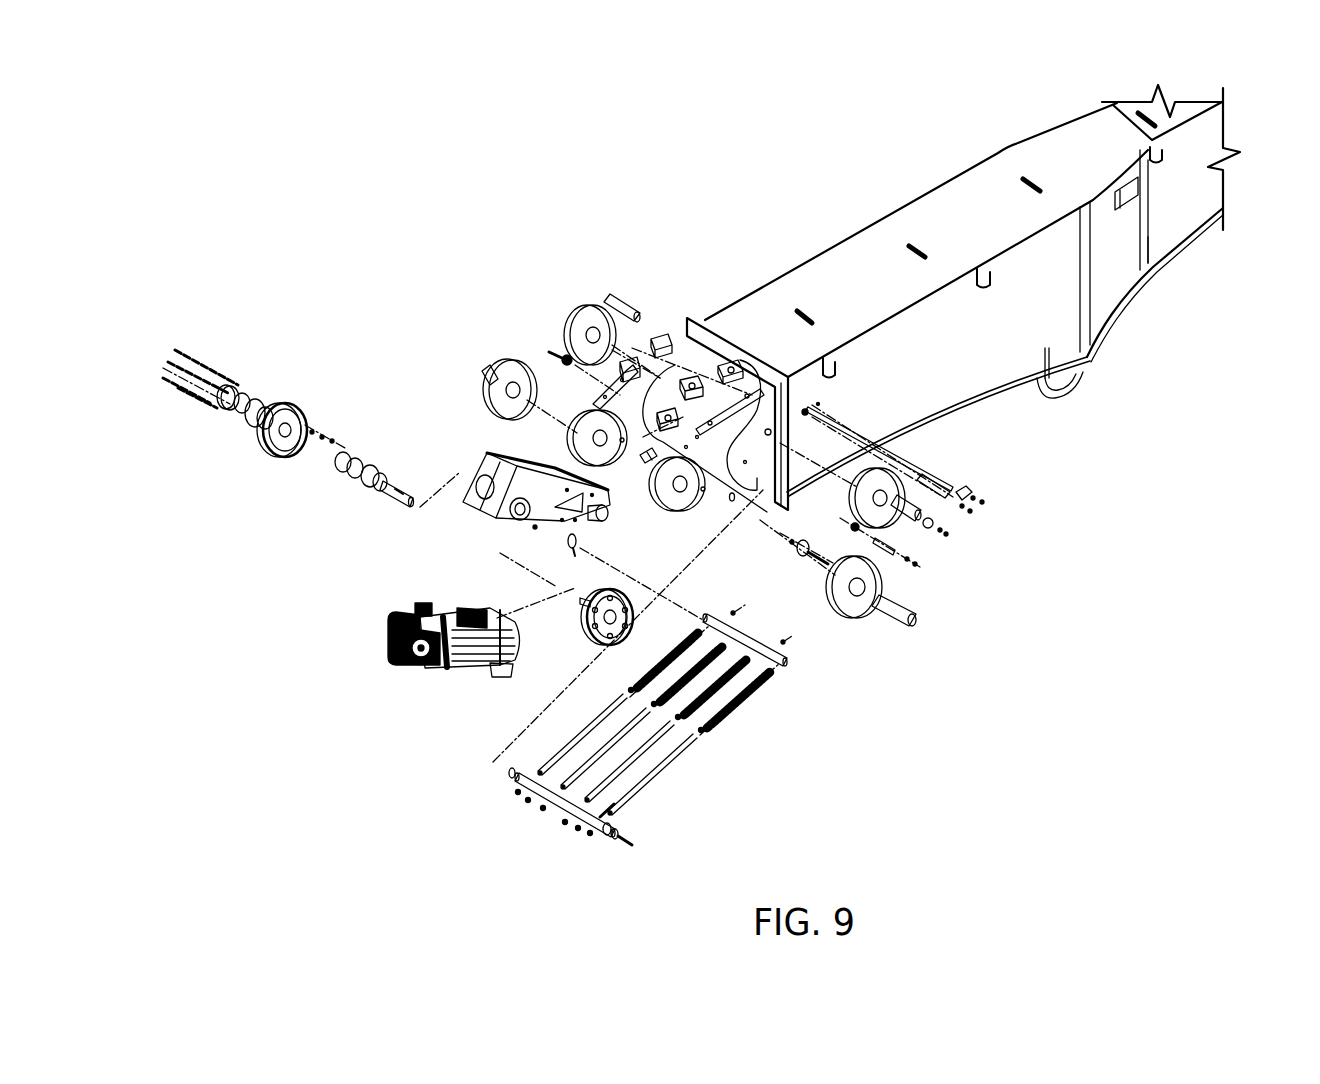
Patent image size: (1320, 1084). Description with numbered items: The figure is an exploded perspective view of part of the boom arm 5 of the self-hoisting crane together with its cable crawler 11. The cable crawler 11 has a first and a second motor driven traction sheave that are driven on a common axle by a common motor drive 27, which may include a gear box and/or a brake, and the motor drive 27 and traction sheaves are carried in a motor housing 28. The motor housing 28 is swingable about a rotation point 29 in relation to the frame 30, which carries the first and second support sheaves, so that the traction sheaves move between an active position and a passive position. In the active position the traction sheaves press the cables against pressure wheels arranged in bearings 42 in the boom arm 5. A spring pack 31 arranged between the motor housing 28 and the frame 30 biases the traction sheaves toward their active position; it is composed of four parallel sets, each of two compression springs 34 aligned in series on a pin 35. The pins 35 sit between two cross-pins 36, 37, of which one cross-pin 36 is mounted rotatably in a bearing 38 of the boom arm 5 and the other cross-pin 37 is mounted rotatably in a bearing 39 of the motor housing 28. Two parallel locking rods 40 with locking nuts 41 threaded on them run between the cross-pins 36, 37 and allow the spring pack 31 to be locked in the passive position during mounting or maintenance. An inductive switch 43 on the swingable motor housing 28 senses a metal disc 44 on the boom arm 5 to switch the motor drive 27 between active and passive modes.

The boom arm 5 is at (895, 135).
The cable crawler 11 is at (447, 418).
The common motor drive 27 is at (453, 667).
The motor housing 28 is at (515, 526).
The rotation point 29 is at (818, 407).
The frame 30 is at (948, 368).
The spring pack 31 is at (798, 755).
The compression springs 34 is at (767, 683).
The pin 35 is at (627, 803).
The cross-pin 36 is at (557, 807).
The cross-pin 37 is at (750, 635).
The bearing 38 is at (723, 500).
The bearing 39 is at (573, 542).
The locking rods 40 is at (657, 762).
The locking nuts 41 is at (580, 827).
The bearings 42 is at (700, 420).
The inductive switch 43 is at (495, 520).
The metal disc 44 is at (797, 552).